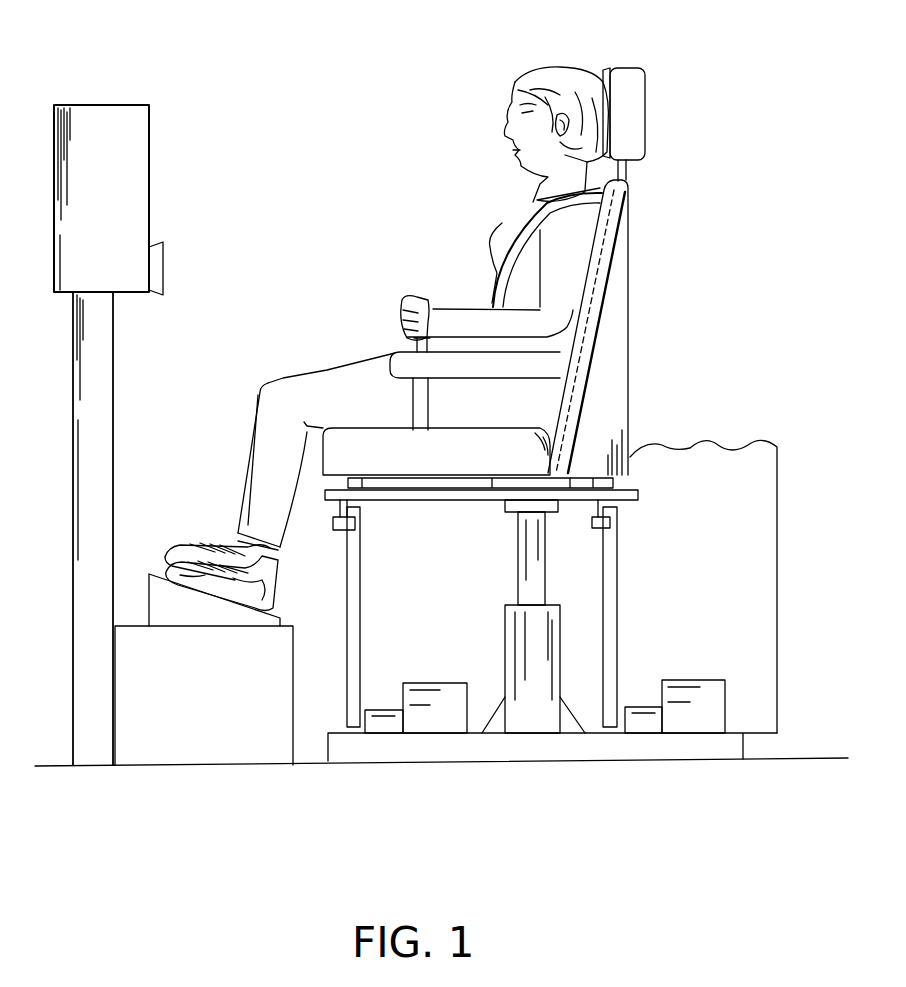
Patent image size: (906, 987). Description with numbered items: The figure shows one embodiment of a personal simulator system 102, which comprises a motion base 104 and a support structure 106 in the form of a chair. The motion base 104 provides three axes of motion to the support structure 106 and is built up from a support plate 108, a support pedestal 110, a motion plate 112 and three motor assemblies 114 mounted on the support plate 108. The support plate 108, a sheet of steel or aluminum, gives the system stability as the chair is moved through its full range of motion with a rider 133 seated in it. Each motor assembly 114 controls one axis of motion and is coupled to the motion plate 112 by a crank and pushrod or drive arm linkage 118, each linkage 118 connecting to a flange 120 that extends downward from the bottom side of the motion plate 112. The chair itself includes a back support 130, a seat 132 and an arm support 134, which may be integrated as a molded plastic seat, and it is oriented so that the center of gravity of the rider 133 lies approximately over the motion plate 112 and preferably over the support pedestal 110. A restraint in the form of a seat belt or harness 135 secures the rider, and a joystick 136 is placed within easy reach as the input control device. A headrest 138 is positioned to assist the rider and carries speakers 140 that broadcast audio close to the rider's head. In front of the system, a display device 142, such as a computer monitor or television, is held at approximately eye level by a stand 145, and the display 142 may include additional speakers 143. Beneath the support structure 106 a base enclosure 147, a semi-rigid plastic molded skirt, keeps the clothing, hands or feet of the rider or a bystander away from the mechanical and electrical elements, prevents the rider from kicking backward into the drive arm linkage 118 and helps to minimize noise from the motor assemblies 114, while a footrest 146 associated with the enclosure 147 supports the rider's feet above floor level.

The personal simulator system 102 is at (222, 800).
The motion base 104 is at (600, 662).
The support structure 106 is at (620, 400).
The support plate 108 is at (740, 760).
The support pedestal 110 is at (545, 572).
The motion plate 112 is at (633, 500).
The motor assemblies 114 is at (425, 683).
The drive arm linkage 118 is at (362, 637).
The flange 120 is at (352, 512).
The back support 130 is at (590, 285).
The seat 132 is at (425, 468).
The rider 133 is at (488, 185).
The arm support 134 is at (400, 363).
The harness 135 is at (497, 280).
The joystick 136 is at (412, 342).
The headrest 138 is at (636, 117).
The speakers 140 is at (603, 75).
The display device 142 is at (150, 162).
The speakers 143 is at (165, 268).
The stand 145 is at (113, 390).
The footrest 146 is at (147, 607).
The base enclosure 147 is at (710, 440).